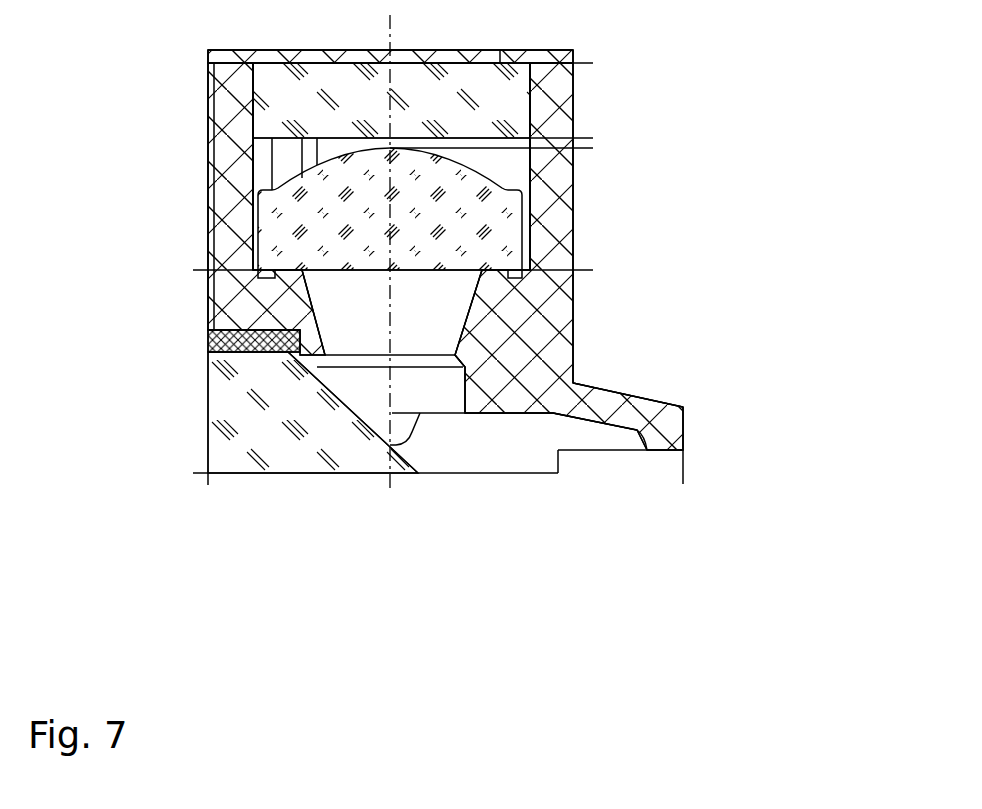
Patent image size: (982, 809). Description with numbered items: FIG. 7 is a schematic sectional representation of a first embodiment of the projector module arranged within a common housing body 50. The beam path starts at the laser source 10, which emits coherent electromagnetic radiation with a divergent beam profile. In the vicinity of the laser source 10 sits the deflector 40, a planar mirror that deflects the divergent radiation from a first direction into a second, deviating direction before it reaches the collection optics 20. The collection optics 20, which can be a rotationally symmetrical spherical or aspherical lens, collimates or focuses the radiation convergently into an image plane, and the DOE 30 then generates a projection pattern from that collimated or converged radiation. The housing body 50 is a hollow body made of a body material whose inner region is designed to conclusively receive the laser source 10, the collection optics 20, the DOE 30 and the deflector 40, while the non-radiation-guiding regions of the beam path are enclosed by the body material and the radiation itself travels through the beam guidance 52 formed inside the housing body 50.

The laser source 10 is at (589, 474).
The collection optics 20 is at (332, 224).
The DOE 30 is at (298, 90).
The deflector 40 is at (292, 399).
The housing body 50 is at (557, 214).
The beam guidance 52 is at (403, 323).